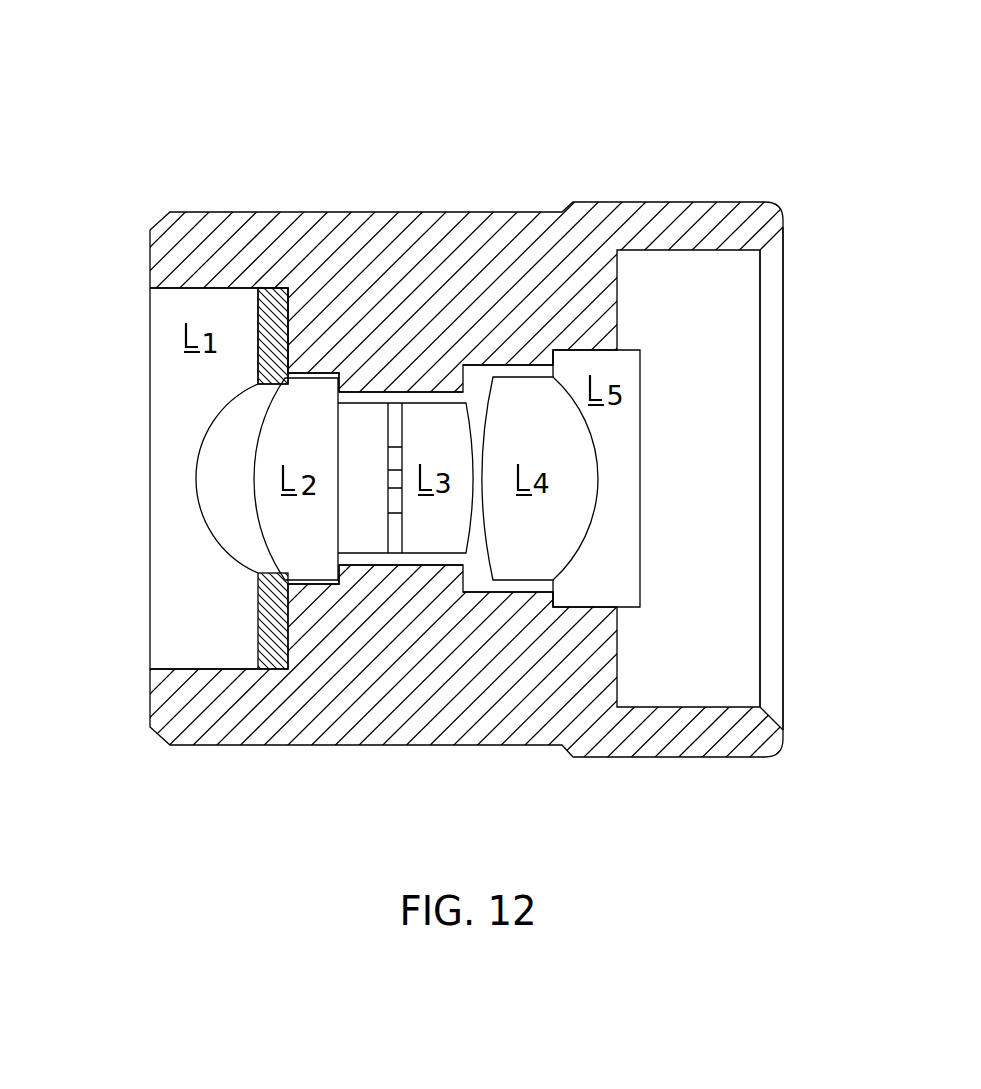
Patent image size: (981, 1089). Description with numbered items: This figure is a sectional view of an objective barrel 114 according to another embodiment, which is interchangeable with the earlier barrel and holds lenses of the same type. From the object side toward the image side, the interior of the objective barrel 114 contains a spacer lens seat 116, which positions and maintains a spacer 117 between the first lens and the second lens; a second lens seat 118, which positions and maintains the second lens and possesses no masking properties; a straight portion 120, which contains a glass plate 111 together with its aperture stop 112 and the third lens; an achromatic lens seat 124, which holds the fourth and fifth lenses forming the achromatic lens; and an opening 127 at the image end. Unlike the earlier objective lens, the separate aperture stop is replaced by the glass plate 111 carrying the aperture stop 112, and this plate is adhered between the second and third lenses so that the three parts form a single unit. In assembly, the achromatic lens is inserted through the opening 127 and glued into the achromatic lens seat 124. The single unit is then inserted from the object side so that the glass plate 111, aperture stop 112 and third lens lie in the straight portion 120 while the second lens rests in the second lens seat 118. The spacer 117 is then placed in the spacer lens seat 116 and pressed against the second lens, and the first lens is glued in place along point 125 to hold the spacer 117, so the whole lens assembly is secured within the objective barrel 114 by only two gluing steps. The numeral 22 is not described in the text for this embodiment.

The objective barrel 114 is at (505, 110).
The opening 127 is at (806, 453).
The spacer lens seat 116 is at (270, 305).
The spacer 117 is at (268, 356).
The second lens seat 118 is at (342, 400).
The straight portion 120 is at (372, 396).
The aperture stop 112 is at (397, 447).
The lens group frame 22 is at (433, 408).
The achromatic lens seat 124 is at (556, 352).
The point 125 is at (152, 292).
The glass plate 111 is at (362, 502).